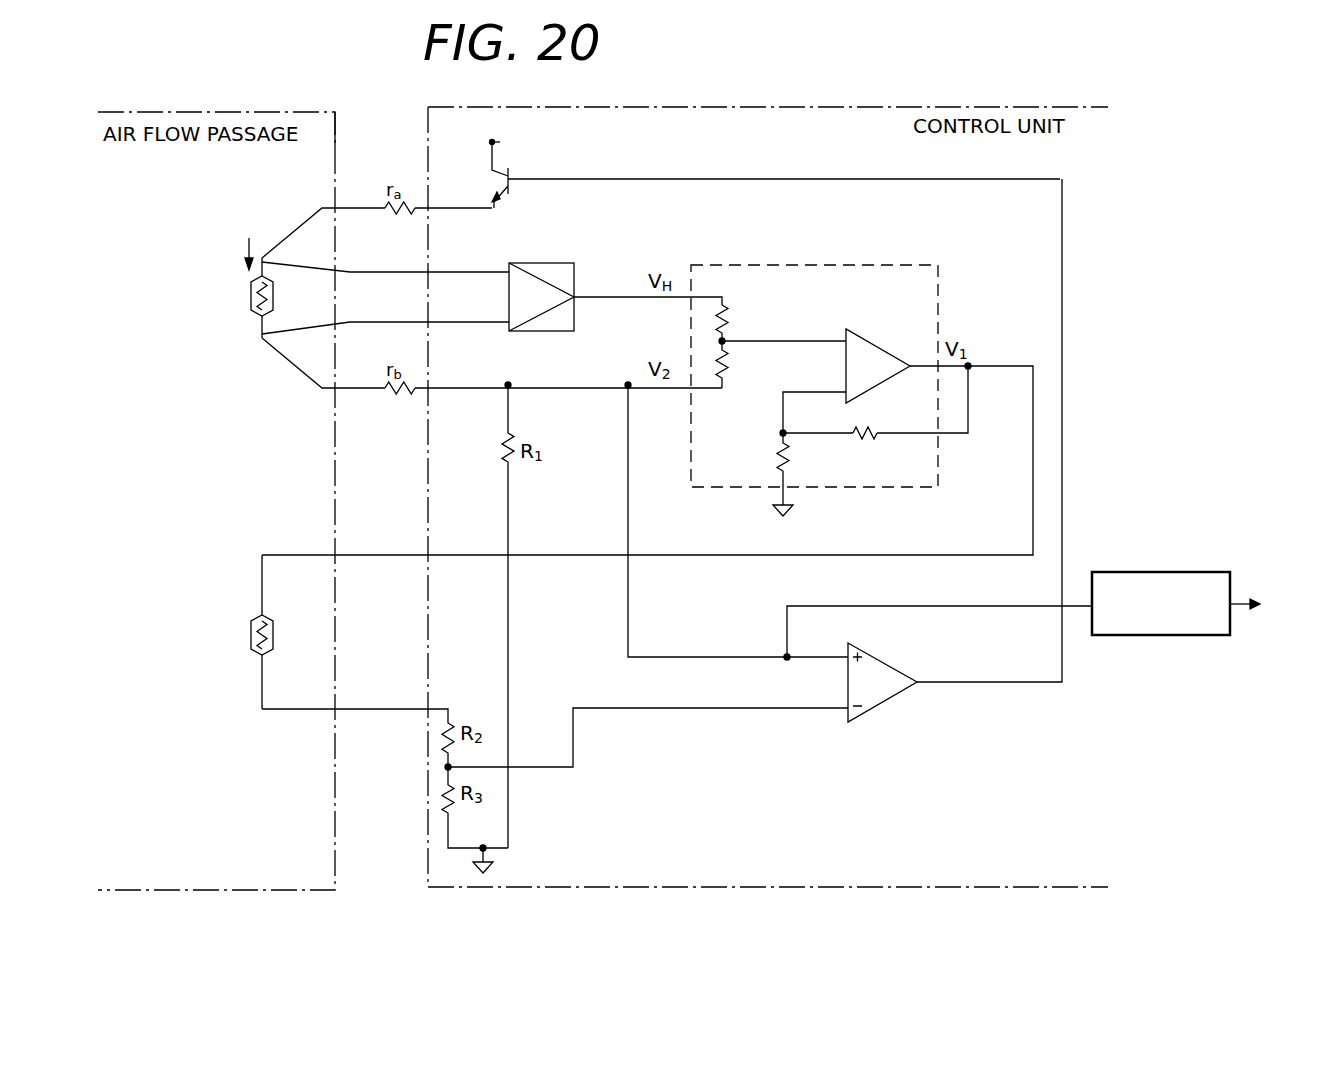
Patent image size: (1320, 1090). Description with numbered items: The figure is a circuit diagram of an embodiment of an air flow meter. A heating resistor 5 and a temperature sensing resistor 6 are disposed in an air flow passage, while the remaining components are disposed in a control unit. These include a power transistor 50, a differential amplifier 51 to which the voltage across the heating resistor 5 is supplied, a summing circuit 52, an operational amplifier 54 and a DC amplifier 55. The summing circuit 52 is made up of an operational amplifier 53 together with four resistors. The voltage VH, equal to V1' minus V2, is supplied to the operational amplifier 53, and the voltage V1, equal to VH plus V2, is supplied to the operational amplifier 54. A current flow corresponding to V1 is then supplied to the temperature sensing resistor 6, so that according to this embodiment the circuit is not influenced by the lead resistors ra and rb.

The heating resistor 5 is at (250, 298).
The temperature sensing resistor 6 is at (250, 650).
The power transistor 50 is at (512, 172).
The differential amplifier 51 is at (565, 263).
The summing circuit 52 is at (829, 363).
The operational amplifier 53 is at (880, 348).
The operational amplifier 54 is at (892, 674).
The DC amplifier 55 is at (1200, 572).